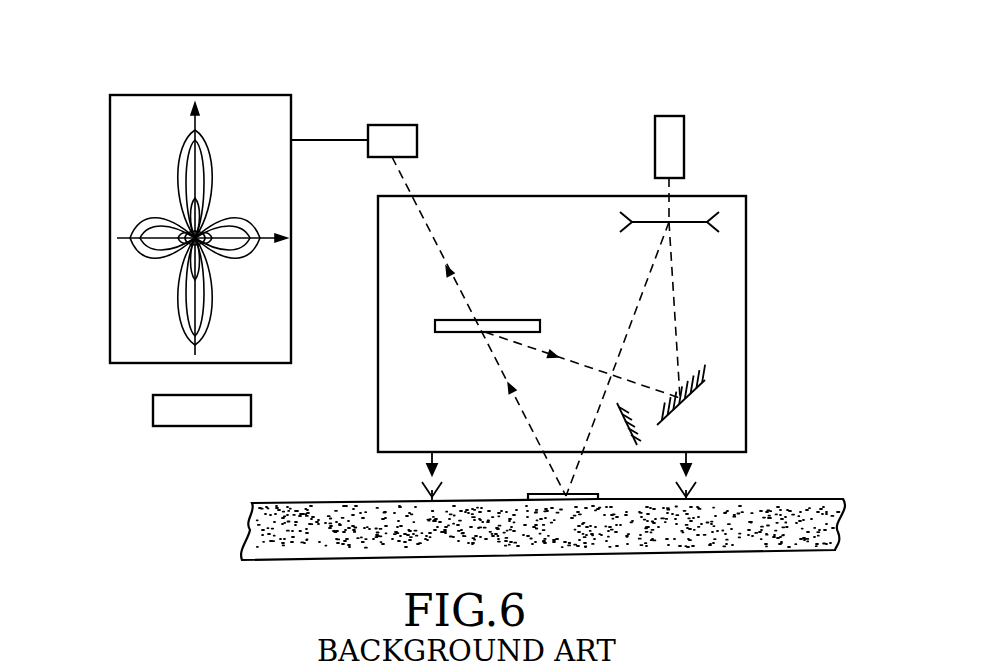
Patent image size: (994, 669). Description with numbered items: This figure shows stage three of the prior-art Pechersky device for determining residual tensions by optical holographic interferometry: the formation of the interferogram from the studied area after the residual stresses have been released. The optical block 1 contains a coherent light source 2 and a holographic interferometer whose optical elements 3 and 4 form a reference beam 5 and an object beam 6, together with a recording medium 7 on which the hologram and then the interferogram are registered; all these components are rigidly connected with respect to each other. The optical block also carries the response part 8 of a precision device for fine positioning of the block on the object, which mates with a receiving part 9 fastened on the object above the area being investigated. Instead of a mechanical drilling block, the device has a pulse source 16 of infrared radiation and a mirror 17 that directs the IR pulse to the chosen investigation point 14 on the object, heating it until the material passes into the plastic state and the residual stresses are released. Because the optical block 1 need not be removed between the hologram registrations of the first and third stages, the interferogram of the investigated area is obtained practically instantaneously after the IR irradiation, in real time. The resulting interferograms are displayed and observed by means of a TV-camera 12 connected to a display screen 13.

The optical block 1 is at (746, 296).
The coherent light source 2 is at (684, 129).
The optical element 3 is at (658, 224).
The optical element 4 is at (693, 395).
The reference beam 5 is at (582, 365).
The object beam 6 is at (657, 310).
The recording medium 7 is at (478, 330).
The response part 8 is at (559, 468).
The receiving part 9 is at (561, 496).
The TV-camera 12 is at (393, 125).
The display screen 13 is at (140, 95).
The investigation point 14 is at (567, 494).
The pulse source of infrared radiation 16 is at (153, 412).
The mirror 17 is at (641, 421).